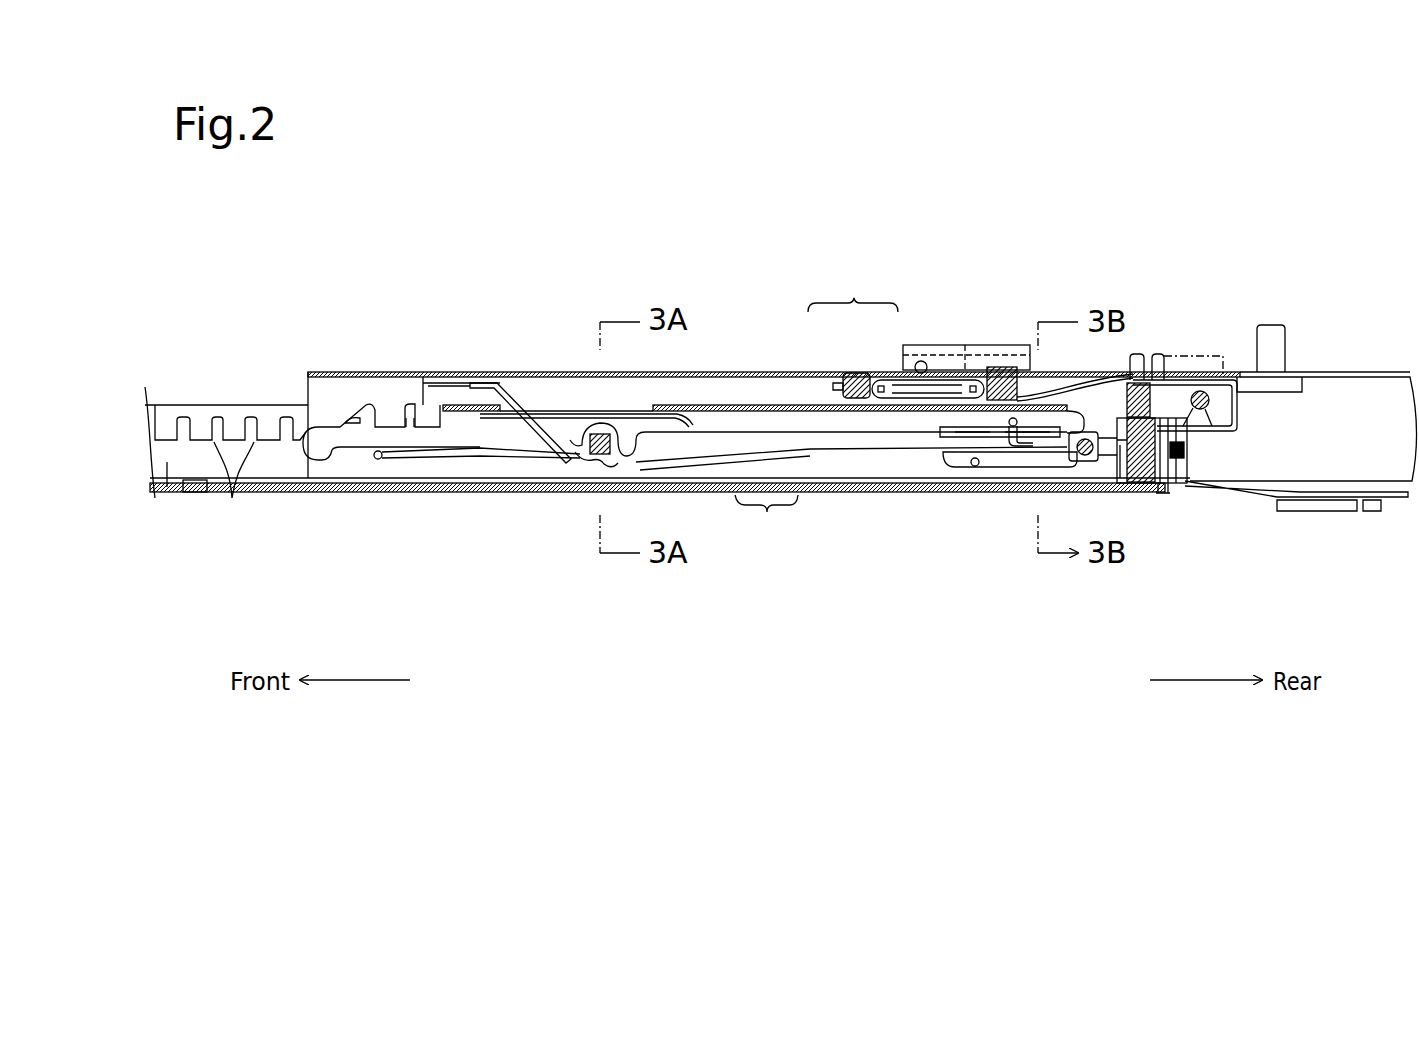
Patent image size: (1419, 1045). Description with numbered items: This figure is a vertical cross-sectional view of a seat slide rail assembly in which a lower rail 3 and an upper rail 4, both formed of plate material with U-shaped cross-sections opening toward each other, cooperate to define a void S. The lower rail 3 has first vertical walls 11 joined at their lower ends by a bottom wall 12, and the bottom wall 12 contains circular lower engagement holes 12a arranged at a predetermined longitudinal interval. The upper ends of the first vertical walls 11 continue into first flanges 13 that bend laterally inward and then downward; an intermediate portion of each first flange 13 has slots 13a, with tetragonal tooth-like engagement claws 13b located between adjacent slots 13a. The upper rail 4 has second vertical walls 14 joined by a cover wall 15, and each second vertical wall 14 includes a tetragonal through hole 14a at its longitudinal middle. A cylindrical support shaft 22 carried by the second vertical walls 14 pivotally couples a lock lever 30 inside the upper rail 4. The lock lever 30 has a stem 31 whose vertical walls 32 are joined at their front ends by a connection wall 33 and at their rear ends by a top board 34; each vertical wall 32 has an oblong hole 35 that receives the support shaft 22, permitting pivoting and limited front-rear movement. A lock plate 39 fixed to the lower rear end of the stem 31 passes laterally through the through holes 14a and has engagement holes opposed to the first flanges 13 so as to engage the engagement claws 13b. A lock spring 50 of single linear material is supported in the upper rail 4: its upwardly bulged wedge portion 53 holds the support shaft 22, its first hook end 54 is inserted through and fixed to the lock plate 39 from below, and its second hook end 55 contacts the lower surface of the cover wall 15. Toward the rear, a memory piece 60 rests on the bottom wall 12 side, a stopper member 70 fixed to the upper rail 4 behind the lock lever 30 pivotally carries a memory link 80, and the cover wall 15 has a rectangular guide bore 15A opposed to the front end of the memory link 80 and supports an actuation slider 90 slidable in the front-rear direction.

The lower rail 3 is at (1386, 506).
The upper rail 4 is at (1378, 372).
The first vertical walls 11 is at (168, 464).
The bottom wall 12 is at (870, 493).
The lower engagement holes 12a is at (771, 523).
The first flanges 13 is at (258, 408).
The slots 13a is at (214, 438).
The engagement claws 13b is at (236, 487).
The second vertical walls 14 is at (338, 376).
The through hole 14a is at (975, 467).
The cover wall 15 is at (400, 378).
The guide bore 15A is at (997, 367).
The support shaft 22 is at (613, 463).
The lock lever 30 is at (919, 333).
The stem 31 is at (846, 376).
The vertical walls 32 is at (512, 452).
The connection wall 33 is at (455, 402).
The top board 34 is at (754, 404).
The oblong hole 35 is at (586, 456).
The lock plate 39 is at (887, 380).
The lock spring 50 is at (510, 385).
The wedge portion 53 is at (617, 427).
The first hook end 54 is at (1040, 386).
The second hook end 55 is at (478, 382).
The memory piece 60 is at (1190, 464).
The stopper member 70 is at (1243, 408).
The memory link 80 is at (1160, 383).
The actuation slider 90 is at (923, 344).
The void S is at (1272, 471).